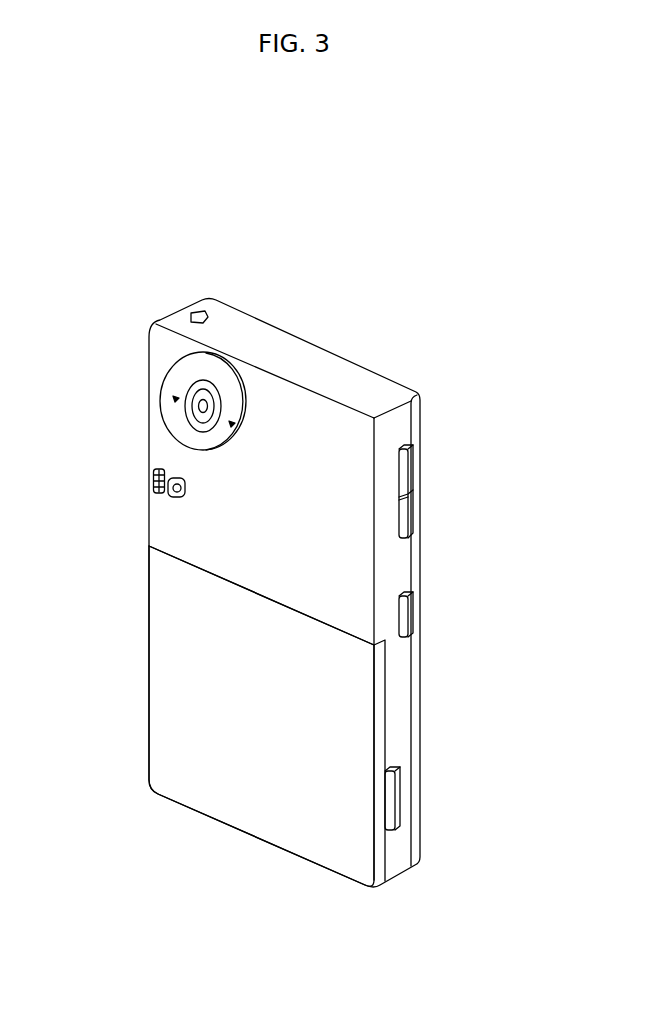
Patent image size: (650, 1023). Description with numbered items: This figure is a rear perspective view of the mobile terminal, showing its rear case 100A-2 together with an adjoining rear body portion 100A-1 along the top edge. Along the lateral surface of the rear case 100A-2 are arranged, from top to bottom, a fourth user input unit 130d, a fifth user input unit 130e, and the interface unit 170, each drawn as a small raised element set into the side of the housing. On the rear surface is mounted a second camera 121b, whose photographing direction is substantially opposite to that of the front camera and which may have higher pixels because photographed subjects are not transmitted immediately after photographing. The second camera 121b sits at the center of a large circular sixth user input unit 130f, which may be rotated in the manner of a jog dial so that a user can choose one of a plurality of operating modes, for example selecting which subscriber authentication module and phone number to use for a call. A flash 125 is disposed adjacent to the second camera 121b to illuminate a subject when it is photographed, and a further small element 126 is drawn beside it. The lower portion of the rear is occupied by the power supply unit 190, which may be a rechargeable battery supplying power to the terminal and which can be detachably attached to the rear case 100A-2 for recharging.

The first body portion (top face with notch) 100A-1 is at (212, 307).
The rear case 100A-2 is at (173, 323).
The sixth user input unit 130f is at (222, 378).
The second camera 121b is at (200, 410).
The flash 125 is at (157, 486).
The sensor 126 is at (175, 492).
The power supply unit 190 is at (170, 668).
The fourth user input unit 130d is at (408, 471).
The fifth user input unit 130e is at (408, 610).
The interface unit 170 is at (392, 804).